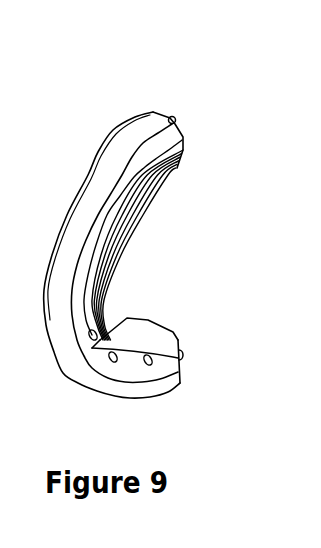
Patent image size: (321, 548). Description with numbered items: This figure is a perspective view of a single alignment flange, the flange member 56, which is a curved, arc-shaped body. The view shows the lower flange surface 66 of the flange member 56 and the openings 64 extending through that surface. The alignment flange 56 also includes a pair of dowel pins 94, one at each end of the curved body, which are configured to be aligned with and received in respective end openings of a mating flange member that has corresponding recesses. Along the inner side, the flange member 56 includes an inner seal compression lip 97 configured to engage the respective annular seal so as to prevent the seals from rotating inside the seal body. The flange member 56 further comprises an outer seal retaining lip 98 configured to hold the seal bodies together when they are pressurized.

The flange member 56 is at (101, 152).
The dowel pins 94 is at (173, 117).
The outer seal retaining lip 98 is at (183, 145).
The lower flange surface 66 is at (174, 157).
The inner seal compression lip 97 is at (175, 163).
The openings 64 is at (148, 360).